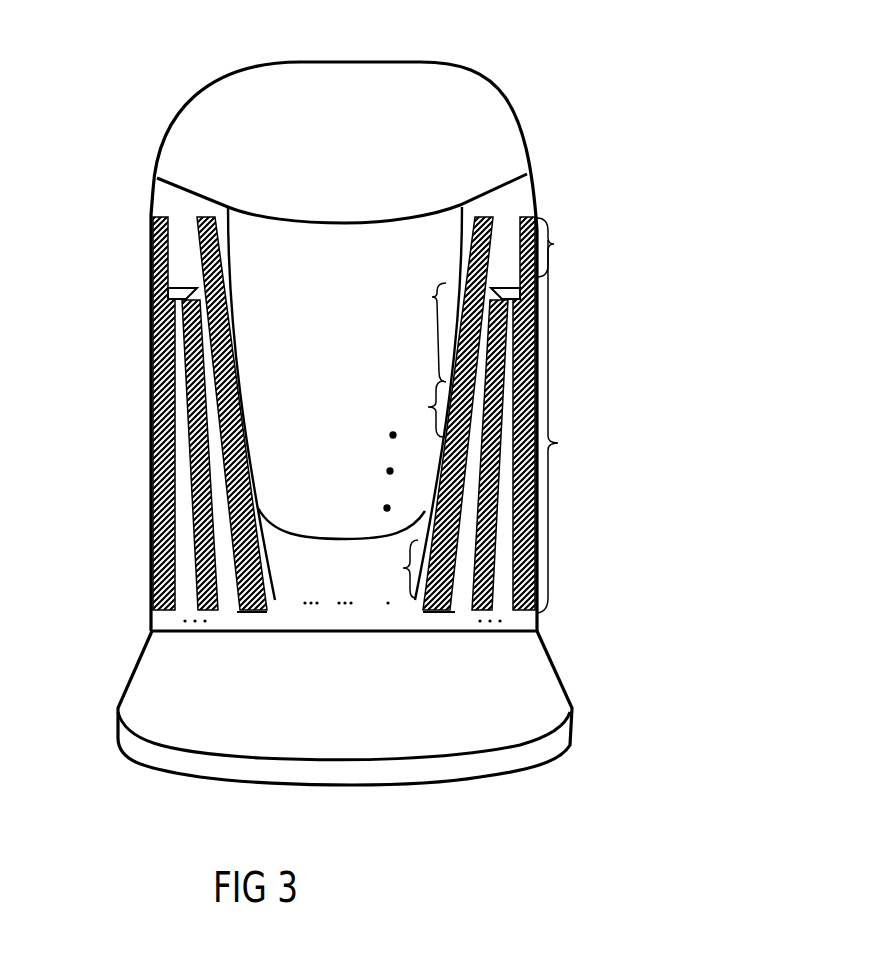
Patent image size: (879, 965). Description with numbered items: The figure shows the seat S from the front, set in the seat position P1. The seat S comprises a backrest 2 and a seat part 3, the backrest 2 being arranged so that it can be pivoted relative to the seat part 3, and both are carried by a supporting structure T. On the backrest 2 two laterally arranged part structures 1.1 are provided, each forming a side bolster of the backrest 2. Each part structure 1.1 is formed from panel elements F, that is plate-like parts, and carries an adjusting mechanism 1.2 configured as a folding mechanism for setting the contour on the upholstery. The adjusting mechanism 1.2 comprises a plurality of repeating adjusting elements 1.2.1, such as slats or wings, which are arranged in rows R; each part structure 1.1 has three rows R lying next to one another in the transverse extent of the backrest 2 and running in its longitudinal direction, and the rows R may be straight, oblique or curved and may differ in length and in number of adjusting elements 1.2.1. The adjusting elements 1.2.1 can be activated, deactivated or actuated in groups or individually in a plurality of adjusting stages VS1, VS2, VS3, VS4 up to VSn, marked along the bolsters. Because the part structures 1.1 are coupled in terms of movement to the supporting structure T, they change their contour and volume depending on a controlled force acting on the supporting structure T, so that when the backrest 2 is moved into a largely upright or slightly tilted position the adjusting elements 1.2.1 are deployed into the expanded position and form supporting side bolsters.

The seat S is at (516, 80).
The part structure 1.1 is at (513, 193).
The panel element F is at (173, 197).
The backrest 2 is at (604, 318).
The seat part 3 is at (539, 682).
The adjusting mechanism 1.2 is at (537, 281).
The adjusting elements 1.2.1 is at (536, 420).
The supporting structure T is at (526, 208).
The adjusting stage VS1 is at (554, 244).
The adjusting stage VS2 is at (572, 426).
The adjusting stage VS3 is at (413, 331).
The adjusting stage VS4 is at (408, 409).
The adjusting stage VSn is at (384, 569).
The seat position P1 is at (560, 539).
The rows R is at (263, 614).